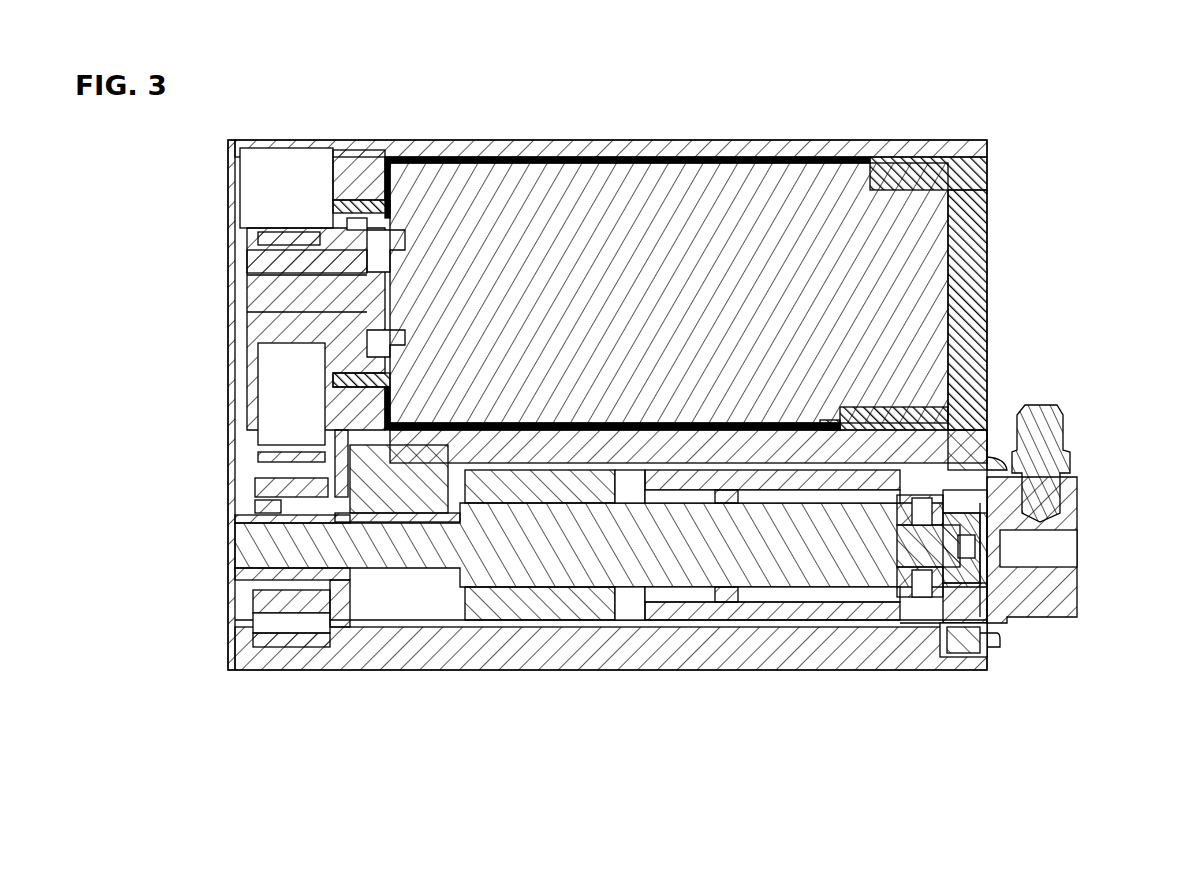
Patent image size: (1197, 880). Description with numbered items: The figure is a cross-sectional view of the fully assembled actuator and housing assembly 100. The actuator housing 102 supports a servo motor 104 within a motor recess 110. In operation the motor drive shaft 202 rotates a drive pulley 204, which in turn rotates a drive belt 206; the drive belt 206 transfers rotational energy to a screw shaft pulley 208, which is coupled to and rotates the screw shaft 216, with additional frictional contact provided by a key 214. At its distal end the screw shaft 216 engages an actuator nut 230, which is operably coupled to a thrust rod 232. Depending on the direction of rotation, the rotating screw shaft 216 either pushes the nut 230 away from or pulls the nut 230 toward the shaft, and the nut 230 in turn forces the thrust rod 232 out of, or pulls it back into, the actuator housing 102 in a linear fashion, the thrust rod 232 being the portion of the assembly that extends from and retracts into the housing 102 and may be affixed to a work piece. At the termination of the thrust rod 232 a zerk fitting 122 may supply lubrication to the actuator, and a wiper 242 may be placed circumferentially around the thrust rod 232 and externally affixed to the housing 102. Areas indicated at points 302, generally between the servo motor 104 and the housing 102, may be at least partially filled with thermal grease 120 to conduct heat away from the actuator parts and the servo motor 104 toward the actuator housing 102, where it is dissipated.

The actuator and housing assembly 100 is at (845, 118).
The actuator housing 102 is at (987, 150).
The servo motor 104 is at (945, 285).
The motor recess 110 is at (966, 174).
The thermal grease 120 is at (340, 210).
The zerk fitting 122 is at (1060, 430).
The motor drive shaft 202 is at (250, 290).
The drive pulley 204 is at (262, 265).
The drive belt 206 is at (270, 370).
The screw shaft pulley 208 is at (258, 600).
The key 214 is at (330, 525).
The screw shaft 216 is at (418, 552).
The actuator nut 230 is at (632, 608).
The thrust rod 232 is at (1074, 522).
The wiper 242 is at (996, 641).
The thermal grease areas 302 is at (376, 205).